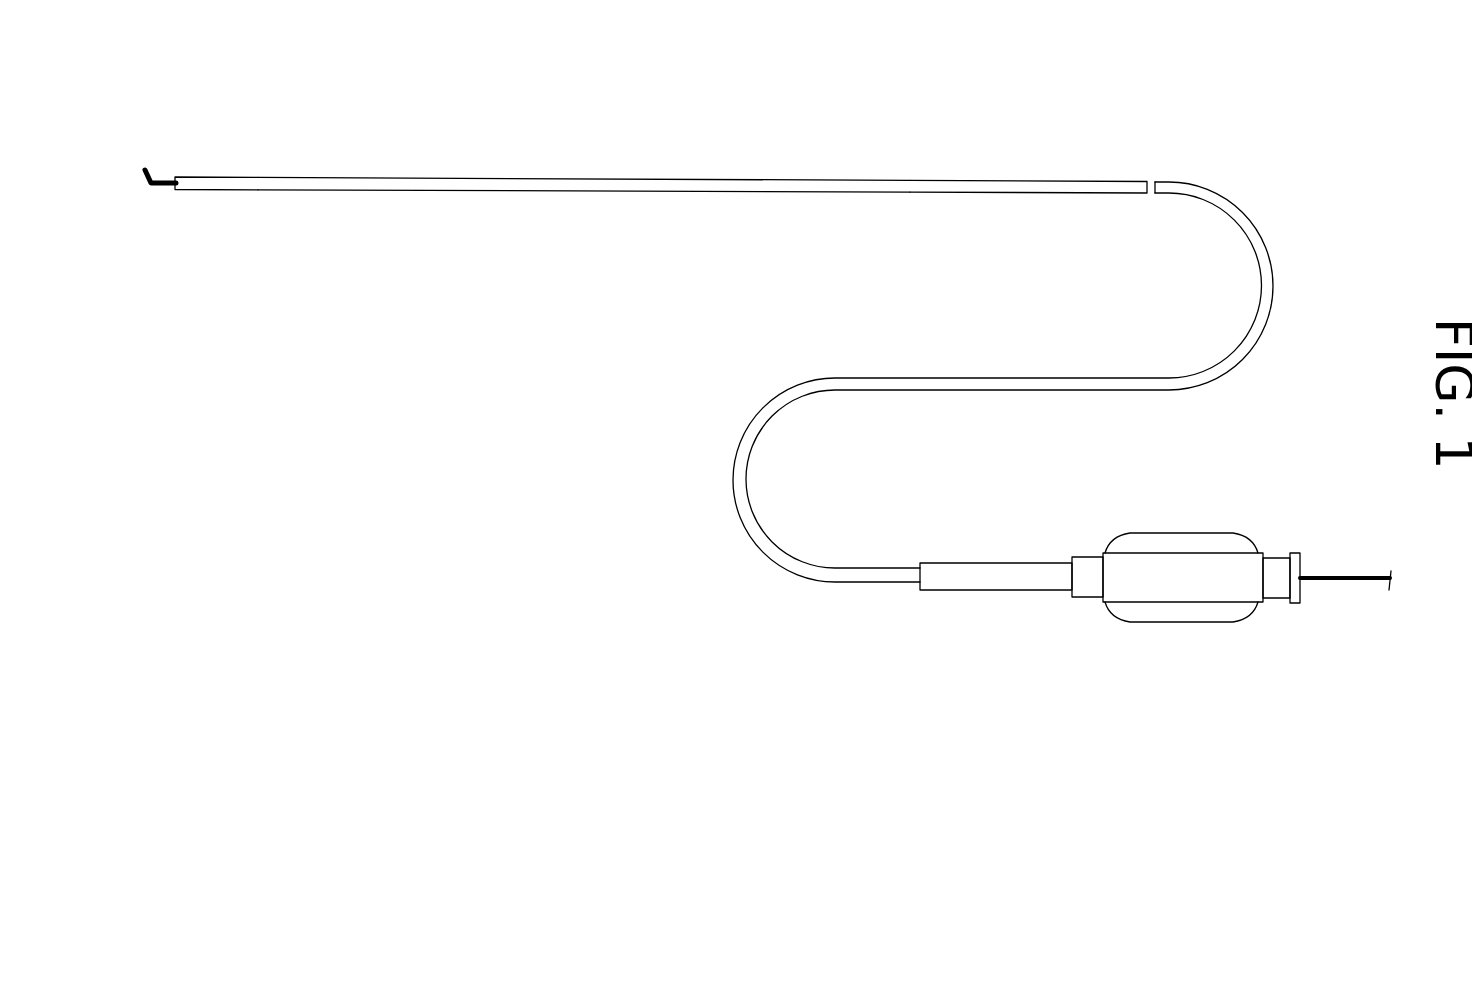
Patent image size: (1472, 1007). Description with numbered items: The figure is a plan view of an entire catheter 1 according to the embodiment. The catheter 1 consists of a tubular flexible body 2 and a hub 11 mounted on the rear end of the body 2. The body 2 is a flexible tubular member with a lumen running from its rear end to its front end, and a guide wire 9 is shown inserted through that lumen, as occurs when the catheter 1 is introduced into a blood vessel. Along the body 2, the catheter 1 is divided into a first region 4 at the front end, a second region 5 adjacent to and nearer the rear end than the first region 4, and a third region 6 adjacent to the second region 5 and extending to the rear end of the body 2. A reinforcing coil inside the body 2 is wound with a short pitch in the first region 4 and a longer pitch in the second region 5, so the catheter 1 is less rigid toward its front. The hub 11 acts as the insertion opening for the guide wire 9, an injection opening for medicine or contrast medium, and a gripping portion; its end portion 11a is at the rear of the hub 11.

The catheter 1 is at (505, 467).
The body 2 is at (977, 393).
The first region 4 is at (253, 172).
The second region 5 is at (902, 170).
The third region 6 is at (917, 172).
The guide wire 9 is at (158, 178).
The hub 11 is at (1170, 587).
The hub flange 11a is at (1303, 583).